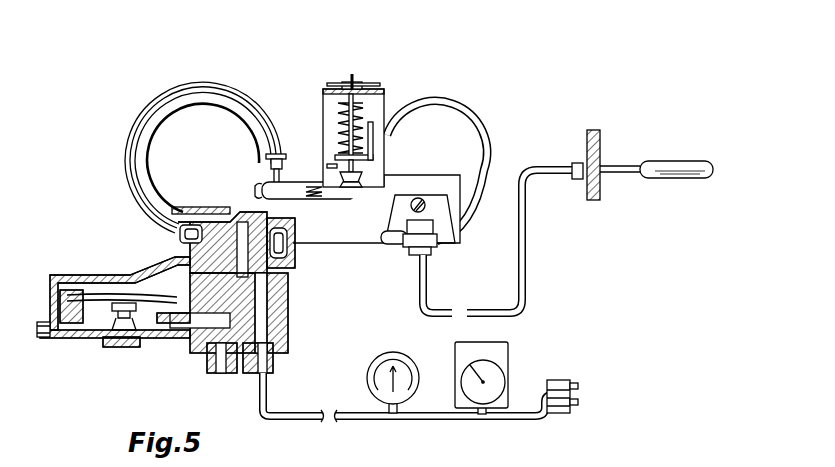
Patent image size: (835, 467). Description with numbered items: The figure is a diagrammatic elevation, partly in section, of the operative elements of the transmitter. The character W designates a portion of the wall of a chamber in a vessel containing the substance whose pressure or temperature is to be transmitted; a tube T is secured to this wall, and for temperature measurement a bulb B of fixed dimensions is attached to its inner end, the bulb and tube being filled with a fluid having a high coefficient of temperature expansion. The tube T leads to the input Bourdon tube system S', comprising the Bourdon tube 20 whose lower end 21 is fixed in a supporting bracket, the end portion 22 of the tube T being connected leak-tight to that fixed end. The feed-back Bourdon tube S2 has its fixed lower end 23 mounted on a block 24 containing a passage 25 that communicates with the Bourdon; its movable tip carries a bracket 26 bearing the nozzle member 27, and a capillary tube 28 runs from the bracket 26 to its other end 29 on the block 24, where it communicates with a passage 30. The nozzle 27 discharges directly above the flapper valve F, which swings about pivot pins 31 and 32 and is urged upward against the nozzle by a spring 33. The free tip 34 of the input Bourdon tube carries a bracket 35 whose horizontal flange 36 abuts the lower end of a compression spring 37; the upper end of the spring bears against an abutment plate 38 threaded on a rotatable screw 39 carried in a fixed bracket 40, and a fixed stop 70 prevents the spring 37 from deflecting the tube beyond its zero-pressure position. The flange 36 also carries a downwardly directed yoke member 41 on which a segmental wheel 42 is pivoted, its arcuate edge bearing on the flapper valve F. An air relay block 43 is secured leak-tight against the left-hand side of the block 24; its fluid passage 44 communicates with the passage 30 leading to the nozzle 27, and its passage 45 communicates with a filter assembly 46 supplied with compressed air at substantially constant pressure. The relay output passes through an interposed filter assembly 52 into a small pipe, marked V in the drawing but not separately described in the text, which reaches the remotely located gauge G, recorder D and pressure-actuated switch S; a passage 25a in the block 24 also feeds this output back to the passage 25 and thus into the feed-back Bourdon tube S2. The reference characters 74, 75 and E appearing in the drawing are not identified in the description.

The feed-back Bourdon tube S2 is at (222, 108).
The input Bourdon tube system S' is at (440, 158).
The Bourdon tube 20 is at (489, 145).
The lower end of Bourdon tube 21 is at (437, 246).
The end portion of tube T 22 is at (390, 243).
The fixed lower end of feed-back Bourdon tube 23 is at (180, 207).
The block 24 is at (290, 306).
The passage 25 is at (220, 208).
The passage 25a is at (292, 262).
The bracket 26 is at (266, 157).
The nozzle member 27 is at (283, 170).
The capillary tube 28 is at (282, 150).
The end of capillary tube 29 is at (160, 230).
The passage 30 is at (185, 240).
The pivot pin 31 is at (392, 181).
The pivot pin 32 is at (262, 180).
The spring 33 is at (312, 193).
The free end or tip of input Bourdon tube 34 is at (387, 106).
The bracket 35 is at (374, 128).
The horizontal flange 36 is at (349, 170).
The compression spring 37 is at (378, 88).
The abutment plate 38 is at (336, 106).
The rotatable screw 39 is at (353, 73).
The fixed bracket 40 is at (392, 165).
The yoke member 41 is at (355, 178).
The segmental wheel 42 is at (362, 186).
The block 43 is at (150, 340).
The fluid passage 44 is at (166, 280).
The passage 45 is at (128, 346).
The filter assembly 46 is at (214, 372).
The filter assembly 52 is at (276, 366).
The fixed stop 70 is at (328, 164).
The lock nut 74 is at (362, 82).
The plate 75 is at (338, 83).
The regulator E is at (77, 255).
The flapper valve F is at (307, 183).
The tube T is at (550, 180).
The wall W is at (600, 136).
The bulb B is at (672, 162).
The pipe V is at (268, 410).
The gauge G is at (420, 354).
The recorder D is at (519, 360).
The pressure-actuated switch S is at (568, 378).